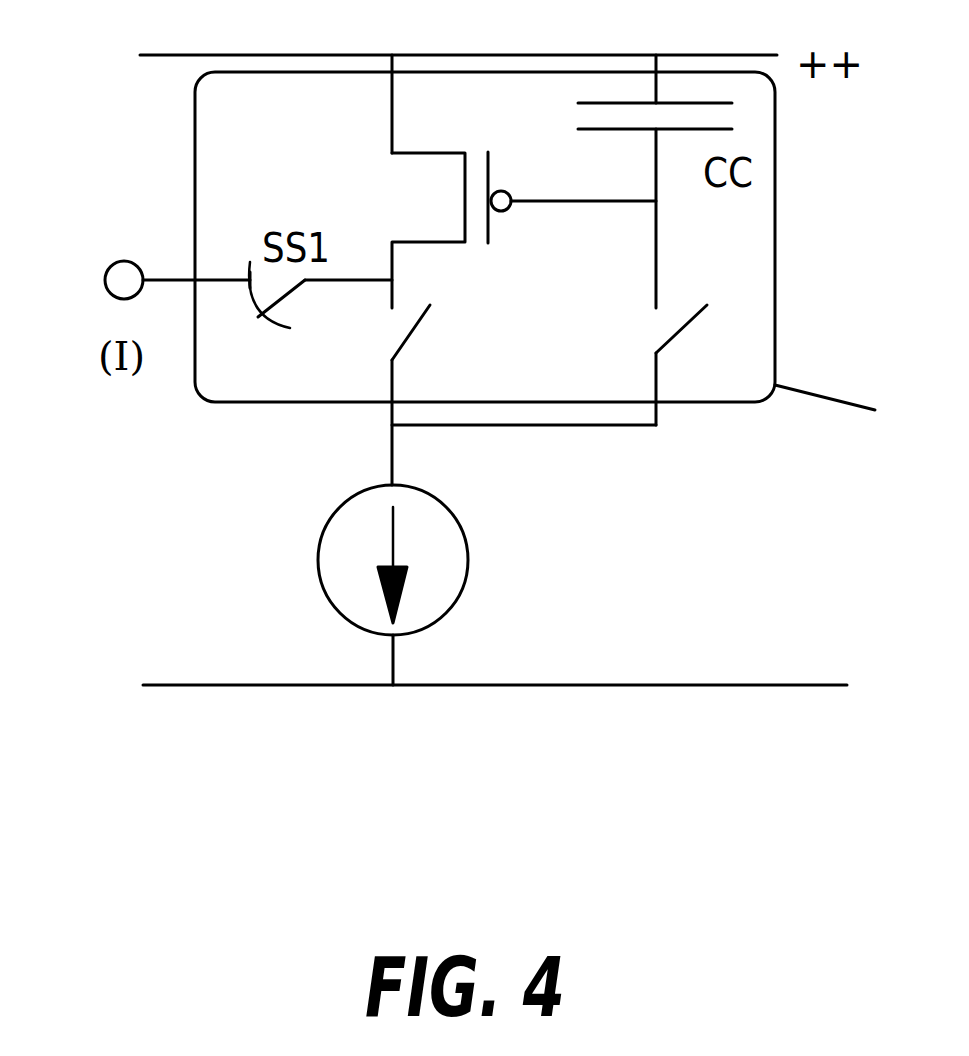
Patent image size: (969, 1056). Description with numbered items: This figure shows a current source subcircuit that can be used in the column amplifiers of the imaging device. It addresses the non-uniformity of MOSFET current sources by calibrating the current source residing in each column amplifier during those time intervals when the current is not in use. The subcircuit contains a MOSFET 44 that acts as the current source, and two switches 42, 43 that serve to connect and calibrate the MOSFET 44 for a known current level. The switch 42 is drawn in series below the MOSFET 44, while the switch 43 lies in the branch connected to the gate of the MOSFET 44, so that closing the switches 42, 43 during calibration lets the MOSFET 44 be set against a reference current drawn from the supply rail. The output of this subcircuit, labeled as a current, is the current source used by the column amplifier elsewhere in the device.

The switch 42 is at (420, 325).
The switch 43 is at (687, 318).
The MOSFET 44 is at (410, 186).